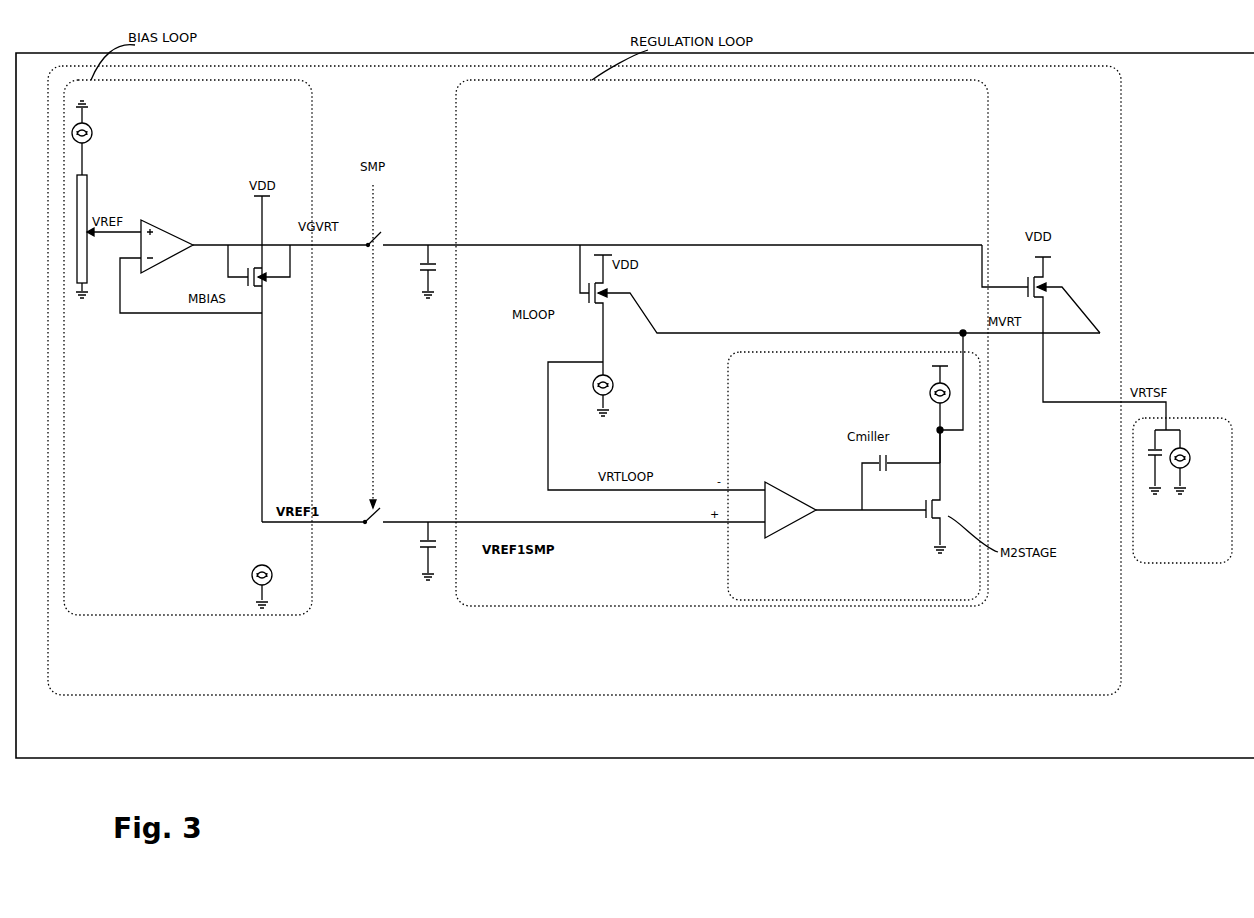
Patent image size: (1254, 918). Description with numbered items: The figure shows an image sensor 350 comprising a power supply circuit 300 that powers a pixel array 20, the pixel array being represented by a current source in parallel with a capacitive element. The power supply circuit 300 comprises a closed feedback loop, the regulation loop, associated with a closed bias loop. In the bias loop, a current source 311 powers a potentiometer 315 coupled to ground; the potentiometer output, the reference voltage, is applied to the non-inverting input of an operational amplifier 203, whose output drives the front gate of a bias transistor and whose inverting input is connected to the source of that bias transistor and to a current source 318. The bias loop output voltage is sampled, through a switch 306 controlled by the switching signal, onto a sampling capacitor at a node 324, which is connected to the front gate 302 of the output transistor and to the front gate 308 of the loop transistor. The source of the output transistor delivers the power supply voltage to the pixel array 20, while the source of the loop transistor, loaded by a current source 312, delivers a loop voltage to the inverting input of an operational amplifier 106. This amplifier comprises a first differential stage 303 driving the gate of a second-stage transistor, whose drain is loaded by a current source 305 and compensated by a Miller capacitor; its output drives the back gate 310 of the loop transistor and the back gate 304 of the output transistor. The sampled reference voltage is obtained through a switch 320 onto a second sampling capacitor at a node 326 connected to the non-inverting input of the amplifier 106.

The pixel array 20 is at (1155, 563).
The operational amplifier 106 is at (757, 598).
The operational amplifier 203 is at (152, 228).
The power supply circuit 300 is at (346, 695).
The front gate 302 is at (1006, 287).
The first differential stage 303 is at (805, 499).
The back gate 304 is at (1048, 287).
The current source 305 is at (929, 397).
The switch 306 is at (385, 233).
The front gate 308 is at (585, 293).
The back gate 310 is at (618, 301).
The current source 311 is at (88, 141).
The current source 312 is at (592, 402).
The potentiometer 315 is at (90, 184).
The current source 318 is at (284, 584).
The switch 320 is at (381, 508).
The node 324 is at (428, 245).
The node 326 is at (432, 521).
The image sensor 350 is at (371, 758).